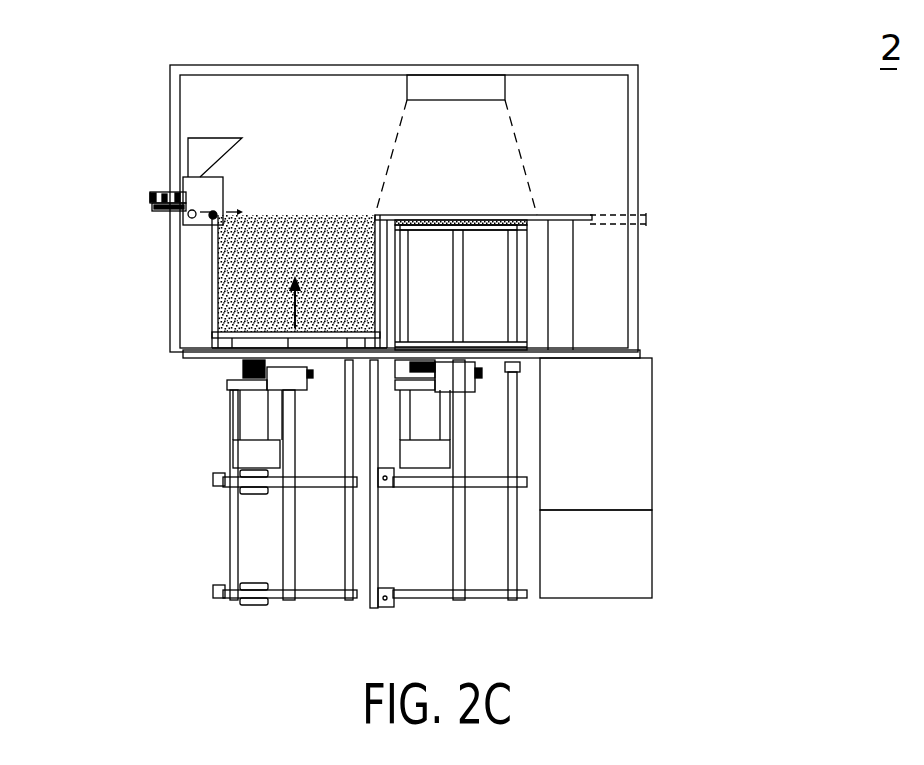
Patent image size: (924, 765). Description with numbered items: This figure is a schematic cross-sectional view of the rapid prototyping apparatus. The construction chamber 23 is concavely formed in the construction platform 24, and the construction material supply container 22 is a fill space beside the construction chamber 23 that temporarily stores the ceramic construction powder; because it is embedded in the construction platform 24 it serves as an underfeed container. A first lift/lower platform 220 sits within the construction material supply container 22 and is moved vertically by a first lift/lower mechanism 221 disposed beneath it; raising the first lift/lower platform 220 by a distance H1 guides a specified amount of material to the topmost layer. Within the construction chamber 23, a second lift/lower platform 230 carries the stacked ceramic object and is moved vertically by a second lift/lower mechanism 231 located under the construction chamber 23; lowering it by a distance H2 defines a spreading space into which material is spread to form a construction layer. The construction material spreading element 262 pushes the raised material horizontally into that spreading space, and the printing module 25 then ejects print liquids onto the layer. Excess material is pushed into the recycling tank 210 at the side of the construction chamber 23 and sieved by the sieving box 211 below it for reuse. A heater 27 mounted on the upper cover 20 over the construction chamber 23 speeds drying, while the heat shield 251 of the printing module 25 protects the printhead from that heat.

The upper cover 20 is at (610, 65).
The construction material supply container 22 is at (313, 237).
The construction chamber 23 is at (507, 217).
The construction platform 24 is at (550, 215).
The printing module 25 is at (180, 161).
The heater 27 is at (452, 88).
The recycling tank 210 is at (602, 448).
The sieving box 211 is at (610, 560).
The first lift/lower platform 220 is at (253, 335).
The first lift/lower mechanism 221 is at (258, 403).
The second lift/lower platform 230 is at (487, 230).
The second lift/lower mechanism 231 is at (412, 420).
The heat shield 251 is at (205, 148).
The construction material spreading element 262 is at (212, 222).